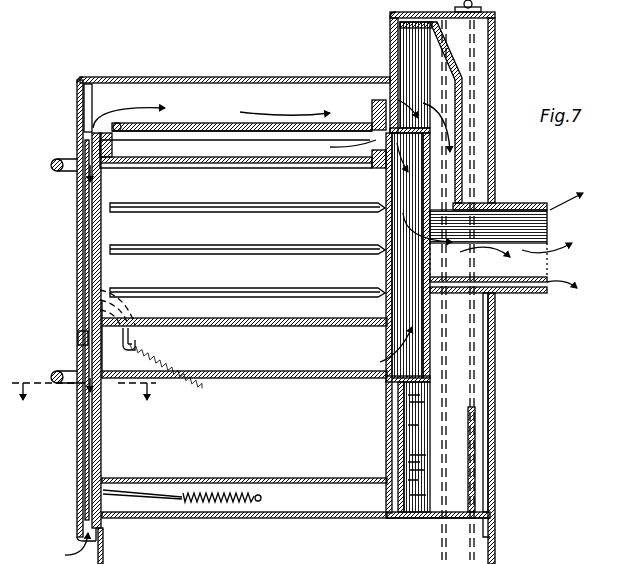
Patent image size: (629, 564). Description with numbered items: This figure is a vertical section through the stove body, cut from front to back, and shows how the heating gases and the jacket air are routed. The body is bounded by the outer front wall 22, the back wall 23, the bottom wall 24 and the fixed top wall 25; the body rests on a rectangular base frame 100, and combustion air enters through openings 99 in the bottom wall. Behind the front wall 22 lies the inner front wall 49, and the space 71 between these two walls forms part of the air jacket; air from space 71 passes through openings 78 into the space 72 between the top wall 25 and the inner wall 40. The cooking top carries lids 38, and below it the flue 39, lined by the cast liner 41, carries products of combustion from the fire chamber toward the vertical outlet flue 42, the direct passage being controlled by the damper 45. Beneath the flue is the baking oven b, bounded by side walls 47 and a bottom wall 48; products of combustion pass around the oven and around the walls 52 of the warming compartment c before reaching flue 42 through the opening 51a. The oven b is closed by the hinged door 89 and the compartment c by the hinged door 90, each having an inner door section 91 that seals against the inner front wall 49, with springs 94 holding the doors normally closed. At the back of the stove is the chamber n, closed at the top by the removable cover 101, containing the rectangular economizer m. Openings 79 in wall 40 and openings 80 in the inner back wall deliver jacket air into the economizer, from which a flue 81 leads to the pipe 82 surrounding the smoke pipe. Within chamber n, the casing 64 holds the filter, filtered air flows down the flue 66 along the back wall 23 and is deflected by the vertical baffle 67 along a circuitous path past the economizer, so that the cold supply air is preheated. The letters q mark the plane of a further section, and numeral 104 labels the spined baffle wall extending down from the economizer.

The front wall 22 is at (74, 516).
The back wall 23 is at (490, 336).
The bottom wall 24 is at (428, 520).
The fixed top wall 25 is at (232, 83).
The lids 38 is at (272, 123).
The flue 39 is at (236, 144).
The wall 40 is at (411, 154).
The cast liner 41 is at (300, 164).
The vertical outlet flue 42 is at (400, 271).
The damper 45 is at (362, 166).
The oven side-wall 47 is at (290, 303).
The oven bottom-wall 48 is at (241, 325).
The inner front wall 49 is at (118, 158).
The opening 51a is at (407, 333).
The warming oven walls 52 is at (258, 377).
The casing 64 is at (470, 376).
The flue 66 is at (478, 479).
The vertical baffle 67 is at (428, 439).
The space 71 is at (92, 252).
The space 72 is at (172, 92).
The openings 78 is at (95, 128).
The openings 79 is at (388, 72).
The openings 80 is at (372, 110).
The flue 81 is at (448, 97).
The pipe 82 is at (530, 289).
The hinged door 89 is at (80, 280).
The hinged door 90 is at (78, 472).
The inner door-section 91 is at (95, 230).
The springs 94 is at (152, 352).
The openings 99 is at (85, 346).
The base frame 100 is at (103, 546).
The removable cover 101 is at (482, 10).
The baffle 104 is at (457, 137).
The economizer m is at (422, 62).
The chamber n is at (414, 447).
The baking oven b is at (222, 281).
The warming compartment c is at (307, 459).
The section line q is at (82, 382).